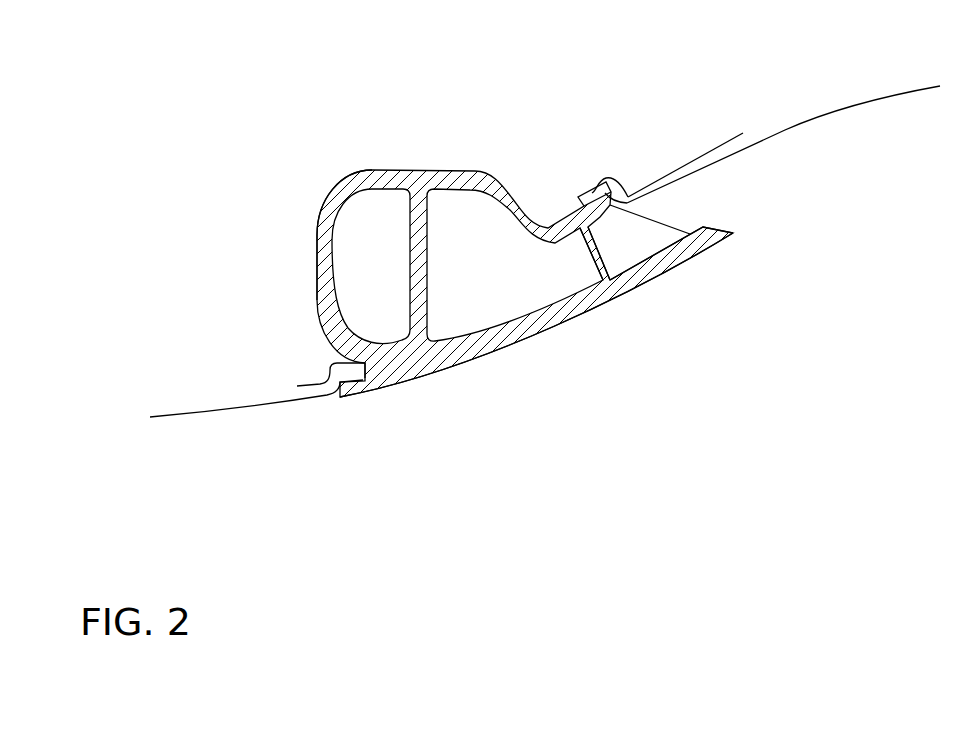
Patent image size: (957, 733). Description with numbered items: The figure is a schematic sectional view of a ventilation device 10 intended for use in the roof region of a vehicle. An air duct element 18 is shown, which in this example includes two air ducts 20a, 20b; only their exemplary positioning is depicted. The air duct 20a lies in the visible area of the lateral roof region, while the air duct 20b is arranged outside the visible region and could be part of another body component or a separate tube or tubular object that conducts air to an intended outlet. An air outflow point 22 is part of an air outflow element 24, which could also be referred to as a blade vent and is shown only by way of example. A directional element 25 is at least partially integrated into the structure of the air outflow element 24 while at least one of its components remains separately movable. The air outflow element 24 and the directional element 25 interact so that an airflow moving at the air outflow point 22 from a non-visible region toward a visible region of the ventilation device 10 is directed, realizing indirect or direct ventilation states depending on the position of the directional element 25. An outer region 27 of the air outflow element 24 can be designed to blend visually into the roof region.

The ventilation device 10 is at (265, 82).
The air duct element 18 is at (643, 528).
The air duct 20a is at (461, 340).
The air duct 20b is at (757, 216).
The air outflow point 22 is at (640, 185).
The air outflow element 24 is at (348, 306).
The directional element 25 is at (603, 218).
The outer region 27 is at (300, 264).